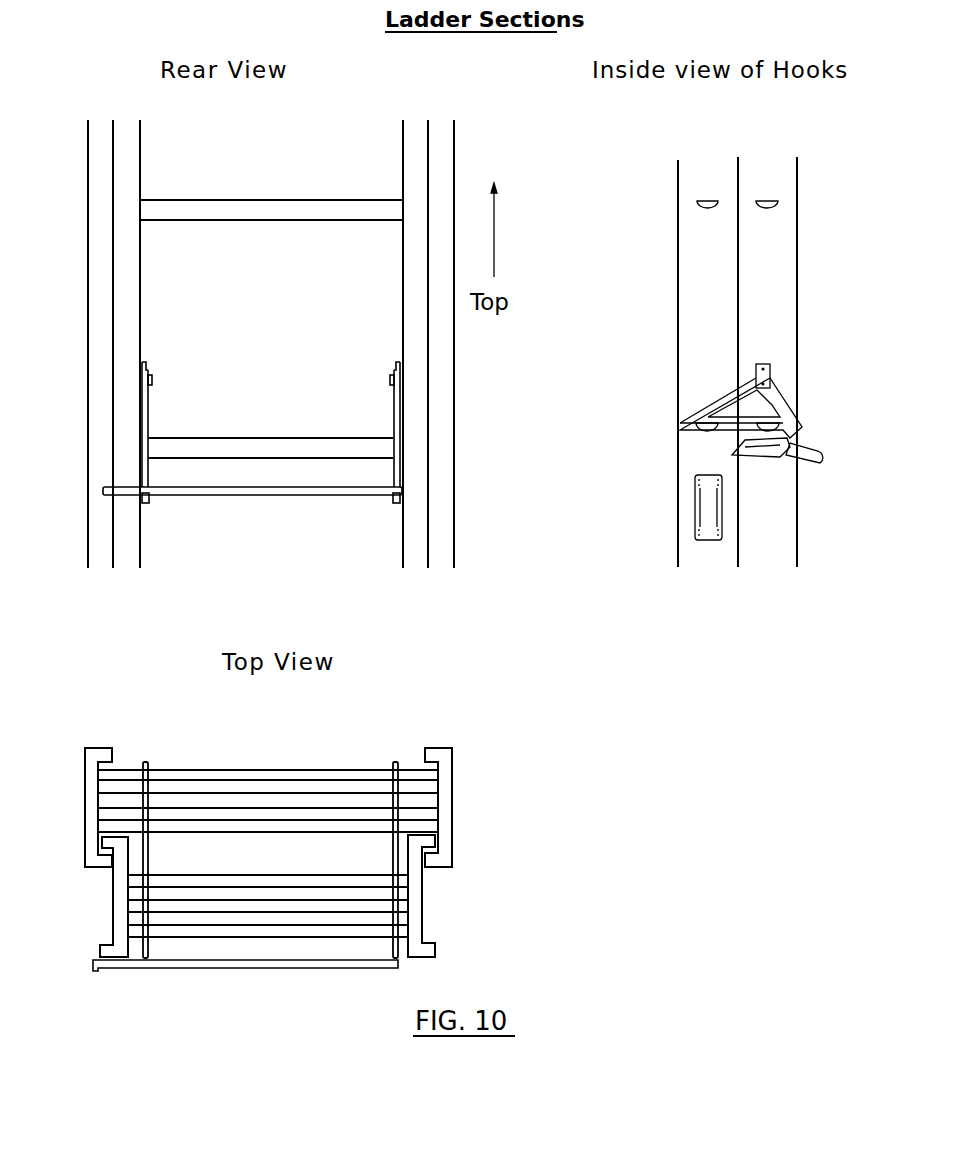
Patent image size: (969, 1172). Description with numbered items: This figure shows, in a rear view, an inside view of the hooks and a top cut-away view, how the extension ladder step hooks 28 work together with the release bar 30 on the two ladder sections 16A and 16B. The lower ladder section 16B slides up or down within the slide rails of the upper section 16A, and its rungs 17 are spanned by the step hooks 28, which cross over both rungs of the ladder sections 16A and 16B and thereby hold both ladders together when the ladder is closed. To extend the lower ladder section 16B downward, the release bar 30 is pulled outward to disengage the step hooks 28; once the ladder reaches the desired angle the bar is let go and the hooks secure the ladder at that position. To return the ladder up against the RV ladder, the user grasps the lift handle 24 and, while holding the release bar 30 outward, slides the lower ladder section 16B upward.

The upper ladder section 16A is at (777, 290).
The lower ladder section 16B is at (693, 188).
The rung 17 is at (175, 200).
The lift handle 24 is at (695, 507).
The step hooks 28 is at (392, 407).
The release bar 30 is at (170, 495).